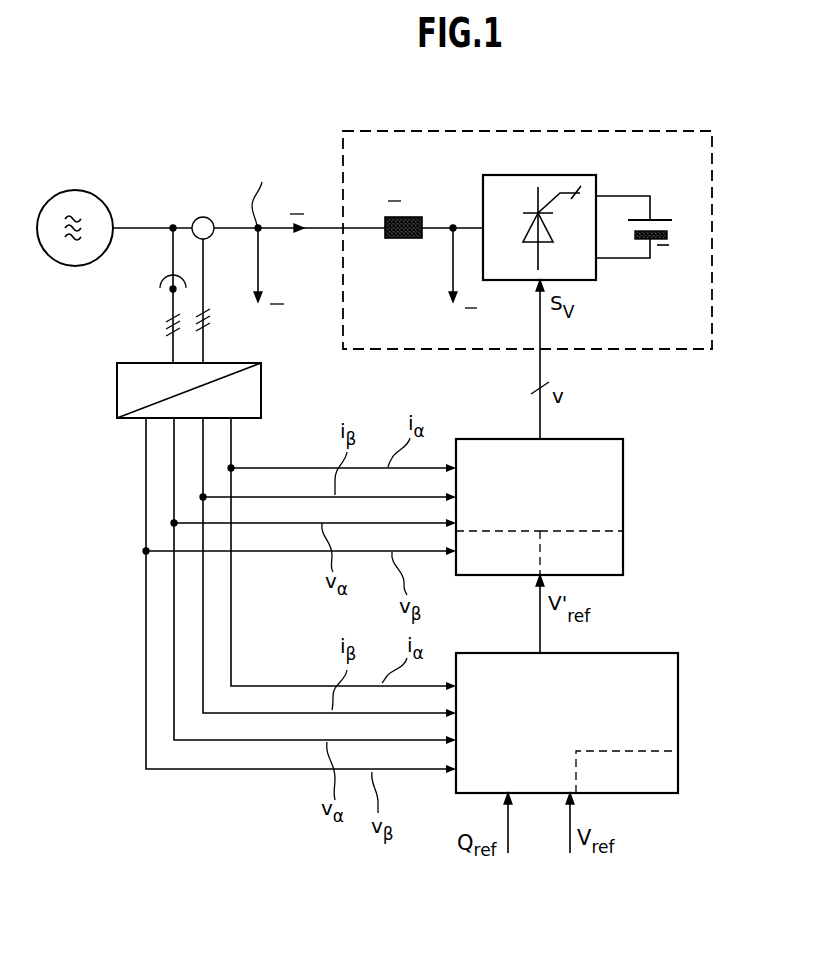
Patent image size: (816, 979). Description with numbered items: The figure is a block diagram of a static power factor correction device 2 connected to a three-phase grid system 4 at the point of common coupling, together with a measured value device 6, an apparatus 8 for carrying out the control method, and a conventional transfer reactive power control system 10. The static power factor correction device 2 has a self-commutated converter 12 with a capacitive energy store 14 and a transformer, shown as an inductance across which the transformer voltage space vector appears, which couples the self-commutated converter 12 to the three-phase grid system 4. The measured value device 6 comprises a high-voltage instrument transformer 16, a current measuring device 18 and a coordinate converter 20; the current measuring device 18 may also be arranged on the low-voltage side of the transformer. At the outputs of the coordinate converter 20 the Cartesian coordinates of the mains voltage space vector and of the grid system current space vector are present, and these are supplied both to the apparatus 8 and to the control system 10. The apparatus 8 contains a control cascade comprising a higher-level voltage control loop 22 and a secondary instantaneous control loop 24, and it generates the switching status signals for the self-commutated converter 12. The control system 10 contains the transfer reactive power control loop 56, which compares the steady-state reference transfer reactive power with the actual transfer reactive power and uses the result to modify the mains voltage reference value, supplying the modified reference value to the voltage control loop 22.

The static power factor correction device 2 is at (558, 131).
The three-phase grid system 4 is at (62, 184).
The measured value device 6 is at (117, 337).
The apparatus for carrying out the method 8 is at (532, 523).
The transfer reactive power control system 10 is at (528, 732).
The self-commutated converter 12 is at (560, 175).
The capacitive energy store 14 is at (677, 232).
The high-voltage instrument transformer 16 is at (160, 283).
The current measuring device 18 is at (198, 216).
The coordinate converter 20 is at (261, 383).
The higher-level voltage control loop 22 is at (486, 568).
The secondary instantaneous control loop 24 is at (565, 568).
The transfer reactive power control loop 56 is at (593, 783).